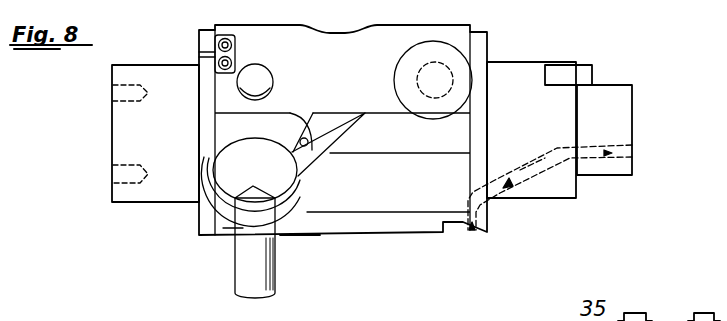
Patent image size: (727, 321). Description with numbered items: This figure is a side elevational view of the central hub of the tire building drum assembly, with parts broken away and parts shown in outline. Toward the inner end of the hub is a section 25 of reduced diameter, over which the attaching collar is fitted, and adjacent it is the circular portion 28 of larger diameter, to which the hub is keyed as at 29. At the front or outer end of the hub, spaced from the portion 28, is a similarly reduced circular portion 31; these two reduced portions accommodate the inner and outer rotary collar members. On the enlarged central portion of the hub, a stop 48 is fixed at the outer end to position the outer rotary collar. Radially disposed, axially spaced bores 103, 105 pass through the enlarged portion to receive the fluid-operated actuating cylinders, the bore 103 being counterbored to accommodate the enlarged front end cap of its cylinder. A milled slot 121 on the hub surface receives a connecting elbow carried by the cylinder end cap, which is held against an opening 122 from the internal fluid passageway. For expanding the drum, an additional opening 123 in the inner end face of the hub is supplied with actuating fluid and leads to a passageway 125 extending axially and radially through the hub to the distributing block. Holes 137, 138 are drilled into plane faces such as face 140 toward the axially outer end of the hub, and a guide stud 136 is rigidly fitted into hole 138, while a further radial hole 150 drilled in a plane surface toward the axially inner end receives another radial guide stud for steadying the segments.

The reduced circular portion 31 is at (140, 128).
The stop 48 is at (200, 50).
The hole 137 is at (260, 72).
The bore 105 is at (402, 70).
The radial hole 150 is at (436, 98).
The bore 103 is at (228, 146).
The opening 122 is at (295, 120).
The milled slot 121 is at (330, 131).
The guide stud 136 is at (240, 280).
The hole 138 is at (231, 230).
The plane face 140 is at (293, 238).
The portion of the hub of larger diameter 28 is at (510, 72).
The key 29 is at (582, 72).
The section of reduced diameter 25 is at (607, 97).
The additional opening 123 is at (632, 152).
The passageway 125 is at (545, 167).